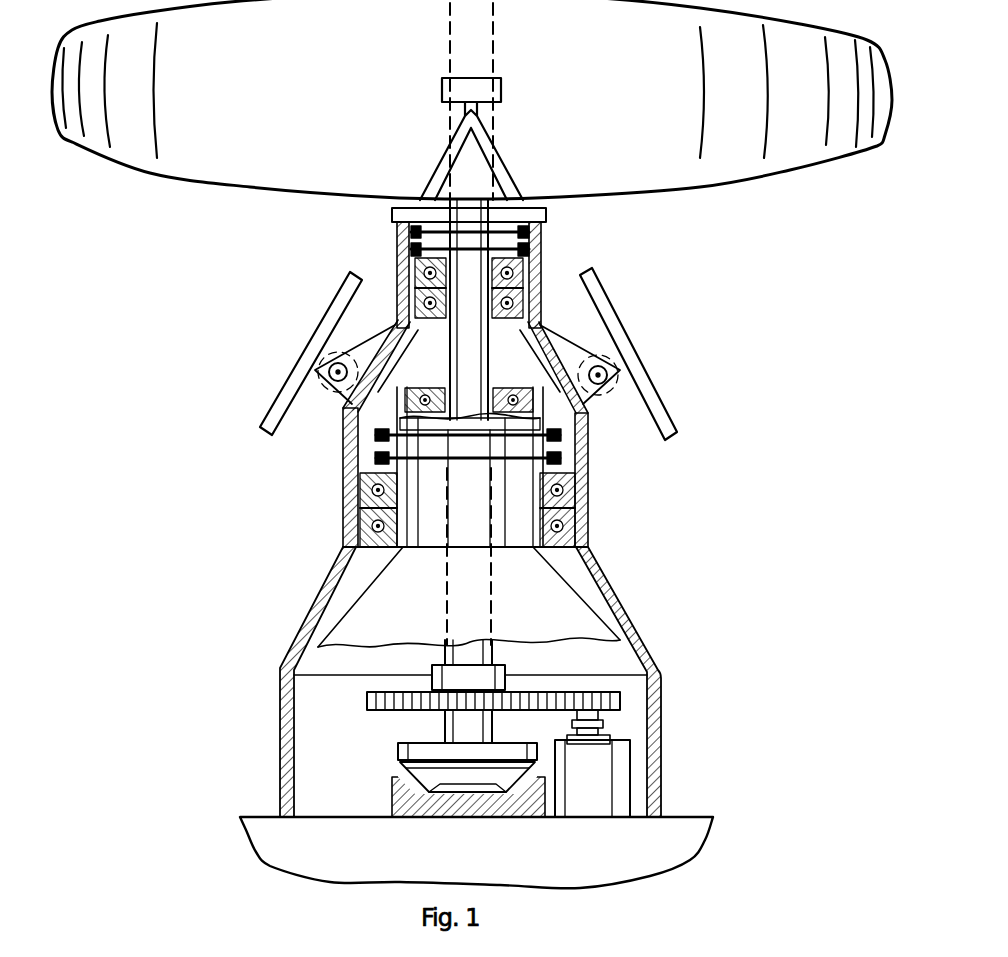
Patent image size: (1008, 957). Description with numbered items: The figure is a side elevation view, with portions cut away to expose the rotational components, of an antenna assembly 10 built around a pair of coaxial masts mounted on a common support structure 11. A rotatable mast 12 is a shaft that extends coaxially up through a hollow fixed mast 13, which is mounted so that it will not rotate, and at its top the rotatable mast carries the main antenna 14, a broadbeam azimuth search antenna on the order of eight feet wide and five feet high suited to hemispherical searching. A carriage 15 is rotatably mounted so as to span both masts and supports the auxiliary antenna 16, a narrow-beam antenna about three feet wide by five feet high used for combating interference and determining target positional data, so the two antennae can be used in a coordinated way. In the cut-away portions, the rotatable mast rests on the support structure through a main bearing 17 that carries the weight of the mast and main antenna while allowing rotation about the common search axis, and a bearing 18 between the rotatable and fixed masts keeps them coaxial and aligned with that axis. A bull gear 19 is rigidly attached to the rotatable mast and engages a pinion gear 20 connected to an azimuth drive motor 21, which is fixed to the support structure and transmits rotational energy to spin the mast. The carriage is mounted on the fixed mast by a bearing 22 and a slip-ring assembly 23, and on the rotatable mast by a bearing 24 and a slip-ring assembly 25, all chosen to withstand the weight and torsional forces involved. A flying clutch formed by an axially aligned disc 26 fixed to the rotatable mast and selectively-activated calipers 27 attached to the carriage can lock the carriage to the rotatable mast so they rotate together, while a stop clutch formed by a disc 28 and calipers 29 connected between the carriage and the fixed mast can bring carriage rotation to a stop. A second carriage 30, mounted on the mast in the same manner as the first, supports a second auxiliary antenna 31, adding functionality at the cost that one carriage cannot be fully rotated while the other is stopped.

The antenna assembly 10 is at (650, 630).
The support structure 11 is at (692, 817).
The rotatable mast 12 is at (457, 650).
The fixed mast 13 is at (282, 708).
The main antenna 14 is at (206, 162).
The carriage 15 is at (590, 524).
The auxiliary antenna 16 is at (606, 320).
The main bearing 17 is at (398, 752).
The bearing 18 is at (513, 388).
The bull gear 19 is at (520, 692).
The pinion gear 20 is at (622, 699).
The azimuth drive motor 21 is at (610, 760).
The bearing 22 is at (572, 493).
The slip-ring assembly 23 is at (362, 504).
The bearing 24 is at (512, 276).
The slip-ring assembly 25 is at (420, 276).
The disc 26 is at (430, 240).
The calipers 27 is at (527, 233).
The disc 28 is at (376, 434).
The calipers 29 is at (560, 434).
The second carriage 30 is at (343, 517).
The second auxiliary antenna 31 is at (325, 312).